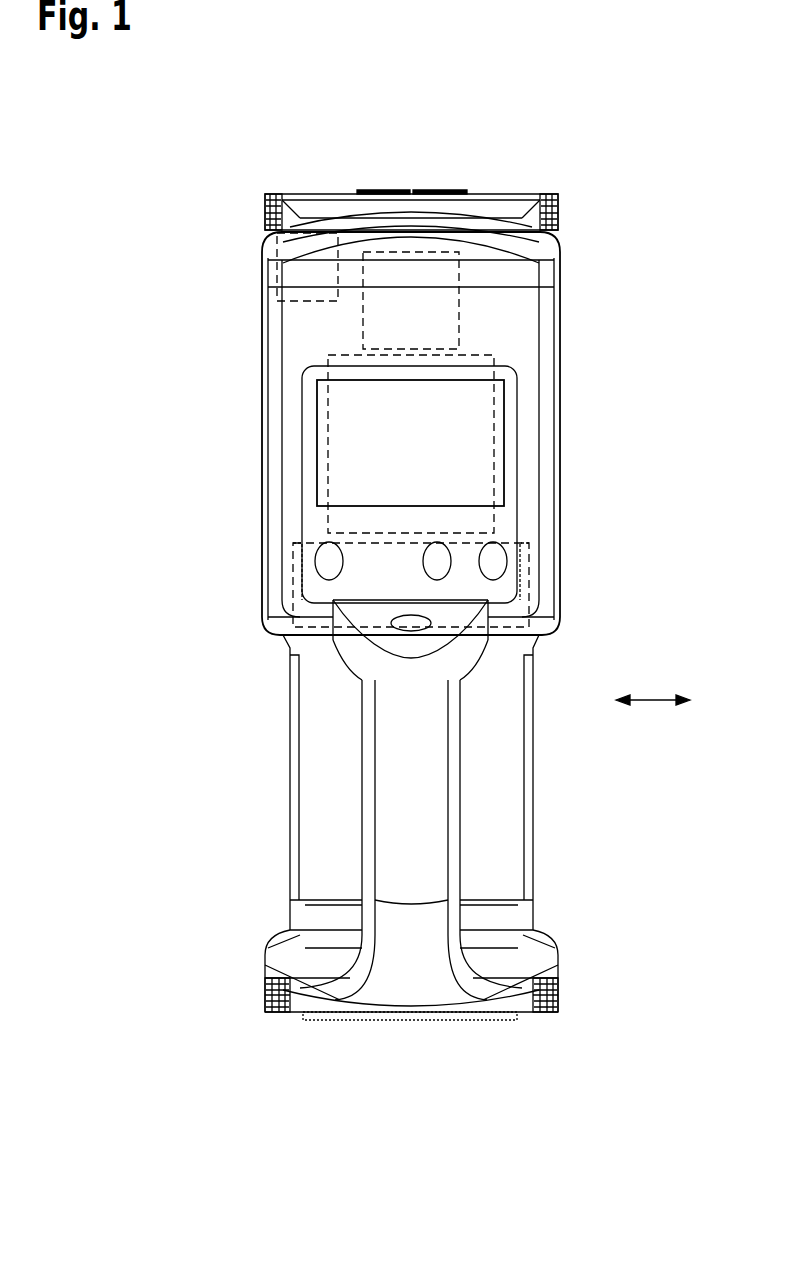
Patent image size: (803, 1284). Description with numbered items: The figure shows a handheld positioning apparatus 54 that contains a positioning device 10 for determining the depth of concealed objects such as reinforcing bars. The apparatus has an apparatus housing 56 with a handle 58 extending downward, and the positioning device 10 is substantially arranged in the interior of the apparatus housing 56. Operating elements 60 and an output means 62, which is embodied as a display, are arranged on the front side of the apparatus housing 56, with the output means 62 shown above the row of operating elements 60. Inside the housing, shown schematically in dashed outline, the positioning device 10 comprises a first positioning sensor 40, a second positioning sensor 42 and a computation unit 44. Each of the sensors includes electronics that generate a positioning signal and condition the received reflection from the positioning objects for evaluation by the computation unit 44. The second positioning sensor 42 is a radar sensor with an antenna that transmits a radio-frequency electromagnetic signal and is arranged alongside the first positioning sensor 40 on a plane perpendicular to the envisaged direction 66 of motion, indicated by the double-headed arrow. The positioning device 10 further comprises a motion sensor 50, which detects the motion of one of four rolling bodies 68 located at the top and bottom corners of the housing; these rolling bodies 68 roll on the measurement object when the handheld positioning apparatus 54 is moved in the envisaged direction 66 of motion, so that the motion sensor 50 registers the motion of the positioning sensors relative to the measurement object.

The positioning device 10 is at (437, 606).
The first positioning sensor 40 is at (456, 479).
The second positioning sensor 42 is at (461, 314).
The computation unit 44 is at (530, 596).
The motion sensor 50 is at (276, 270).
The handheld positioning apparatus 54 is at (603, 201).
The apparatus housing 56 is at (549, 273).
The handle 58 is at (425, 826).
The operating elements 60 is at (509, 562).
The output means 62 is at (504, 488).
The envisaged direction of motion 66 is at (655, 700).
The rolling bodies 68 is at (289, 192).